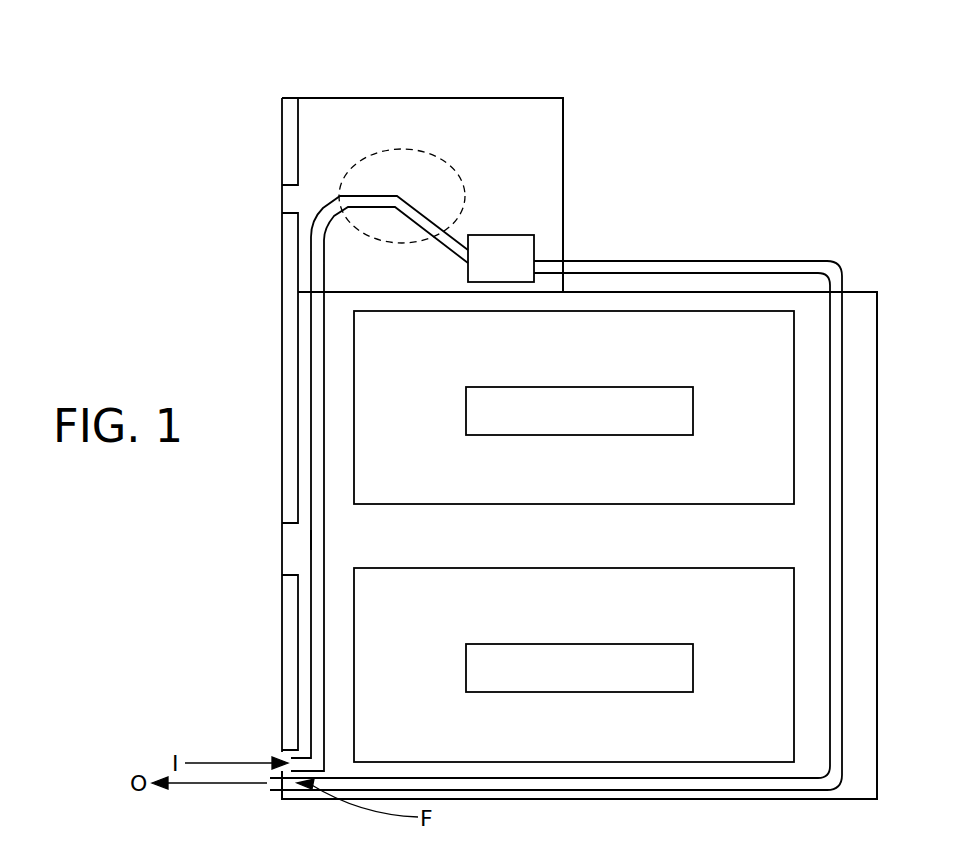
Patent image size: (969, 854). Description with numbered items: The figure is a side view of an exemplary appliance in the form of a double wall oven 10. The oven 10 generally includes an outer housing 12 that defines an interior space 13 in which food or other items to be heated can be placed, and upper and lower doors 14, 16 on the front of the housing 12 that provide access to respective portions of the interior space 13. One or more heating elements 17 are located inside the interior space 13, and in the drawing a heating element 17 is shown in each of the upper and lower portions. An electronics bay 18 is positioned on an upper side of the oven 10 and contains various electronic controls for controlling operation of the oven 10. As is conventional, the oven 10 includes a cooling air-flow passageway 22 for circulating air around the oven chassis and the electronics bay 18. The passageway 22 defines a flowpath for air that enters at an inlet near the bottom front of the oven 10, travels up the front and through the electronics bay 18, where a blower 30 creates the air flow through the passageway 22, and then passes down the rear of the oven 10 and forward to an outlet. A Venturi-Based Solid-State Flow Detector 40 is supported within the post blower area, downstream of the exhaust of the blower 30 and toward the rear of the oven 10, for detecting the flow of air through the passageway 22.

The double wall oven 10 is at (707, 182).
The outer housing 12 is at (807, 392).
The interior space 13 is at (768, 483).
The upper door 14 is at (282, 286).
The lower door 16 is at (282, 634).
The heating element 17 is at (483, 387).
The electronics bay 18 is at (335, 93).
The cooling air-flow passageway 22 is at (311, 540).
The blower 30 is at (448, 162).
The Venturi-Based Solid-State Flow Detector 40 is at (527, 240).